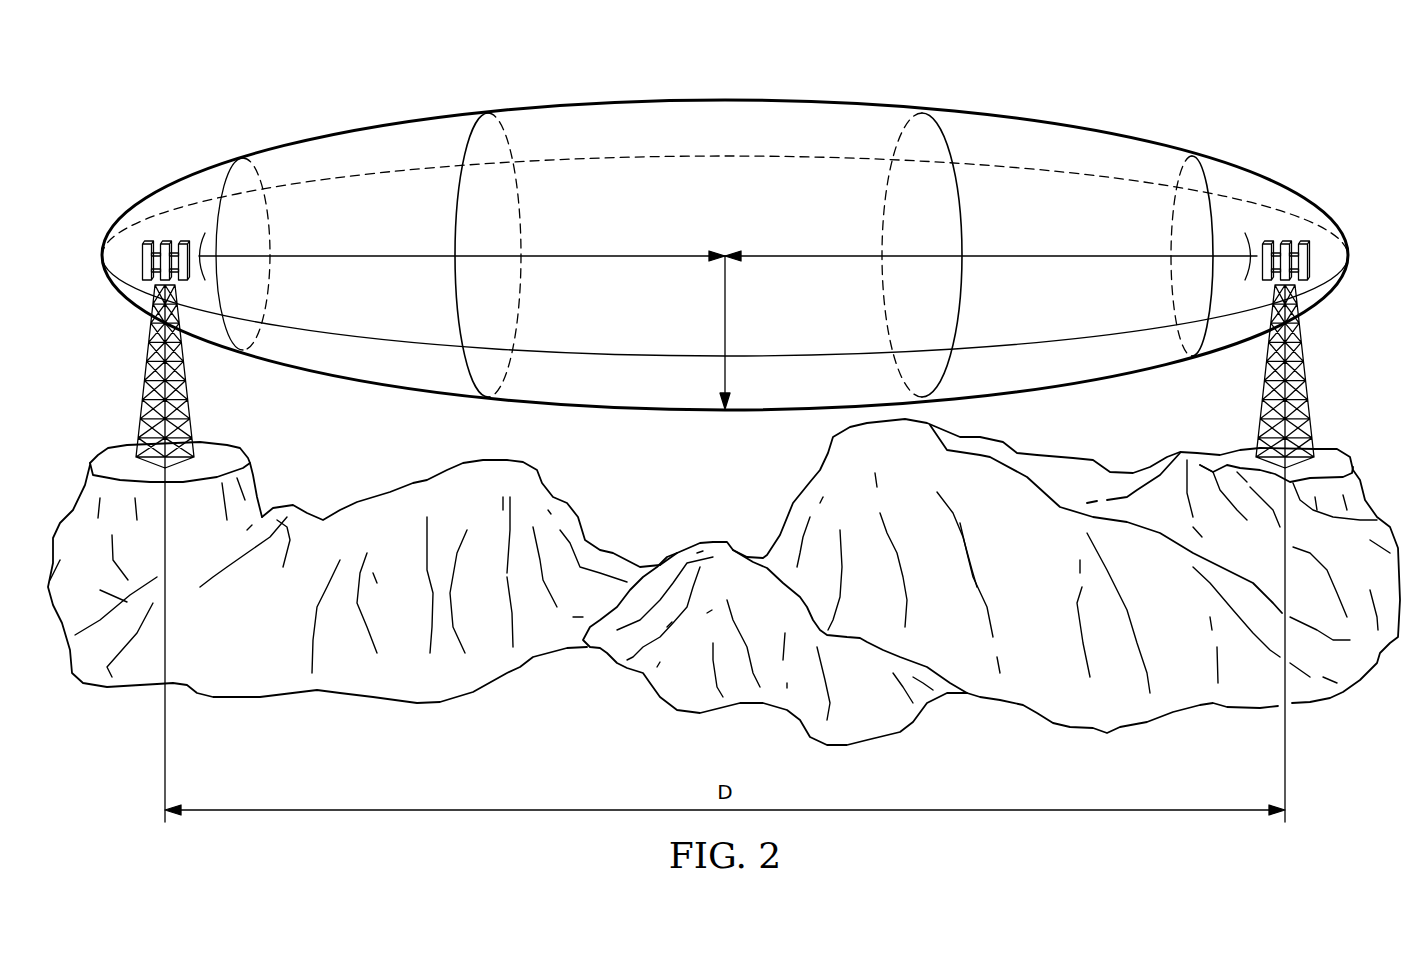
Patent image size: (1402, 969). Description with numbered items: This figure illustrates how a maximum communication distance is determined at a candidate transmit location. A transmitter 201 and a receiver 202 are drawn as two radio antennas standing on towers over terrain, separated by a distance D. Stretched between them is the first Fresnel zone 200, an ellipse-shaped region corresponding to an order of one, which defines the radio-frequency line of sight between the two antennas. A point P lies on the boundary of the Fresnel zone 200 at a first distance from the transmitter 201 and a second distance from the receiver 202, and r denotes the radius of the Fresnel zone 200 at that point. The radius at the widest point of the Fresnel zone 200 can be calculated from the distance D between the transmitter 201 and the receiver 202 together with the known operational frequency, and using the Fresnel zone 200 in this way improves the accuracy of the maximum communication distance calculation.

The Fresnel zone 200 is at (806, 102).
The transmitter 201 is at (146, 373).
The receiver 202 is at (1306, 375).